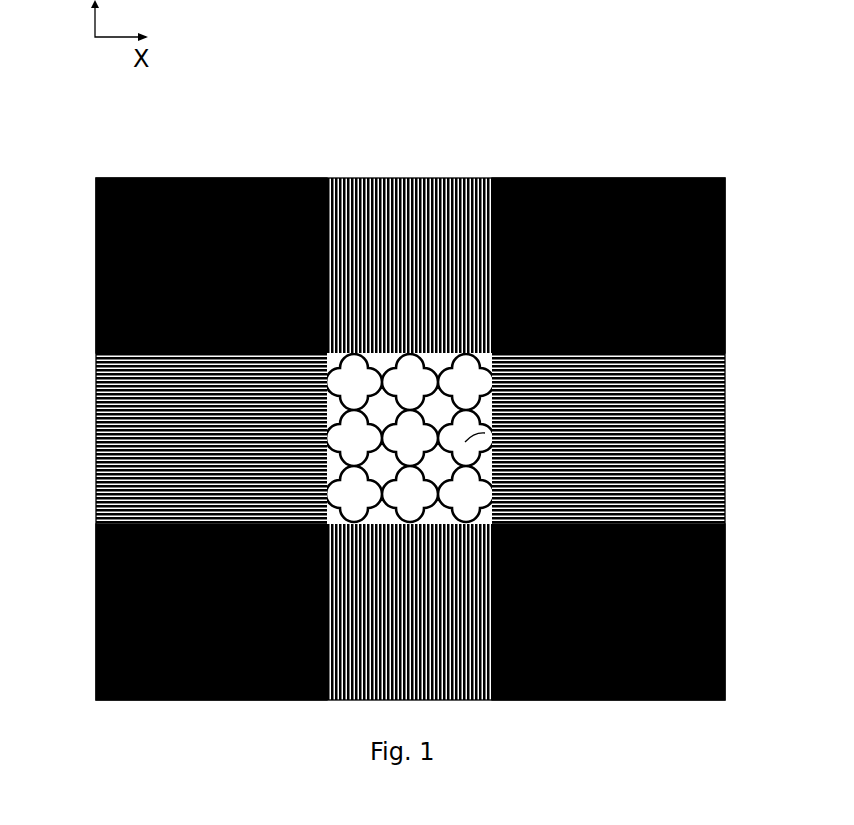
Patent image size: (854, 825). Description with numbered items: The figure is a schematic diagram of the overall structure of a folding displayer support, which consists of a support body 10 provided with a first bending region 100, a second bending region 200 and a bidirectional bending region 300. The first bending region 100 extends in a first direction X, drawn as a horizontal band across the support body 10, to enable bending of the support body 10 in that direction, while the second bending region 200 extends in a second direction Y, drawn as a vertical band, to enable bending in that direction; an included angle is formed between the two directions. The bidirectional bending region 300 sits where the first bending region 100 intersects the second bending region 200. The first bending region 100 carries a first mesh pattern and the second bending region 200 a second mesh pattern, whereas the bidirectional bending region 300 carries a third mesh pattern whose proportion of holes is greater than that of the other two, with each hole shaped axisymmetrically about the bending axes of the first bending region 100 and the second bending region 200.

The support body 10 is at (115, 178).
The first bending region 100 is at (96, 445).
The second bending region 200 is at (408, 178).
The bidirectional bending region 300 is at (725, 465).